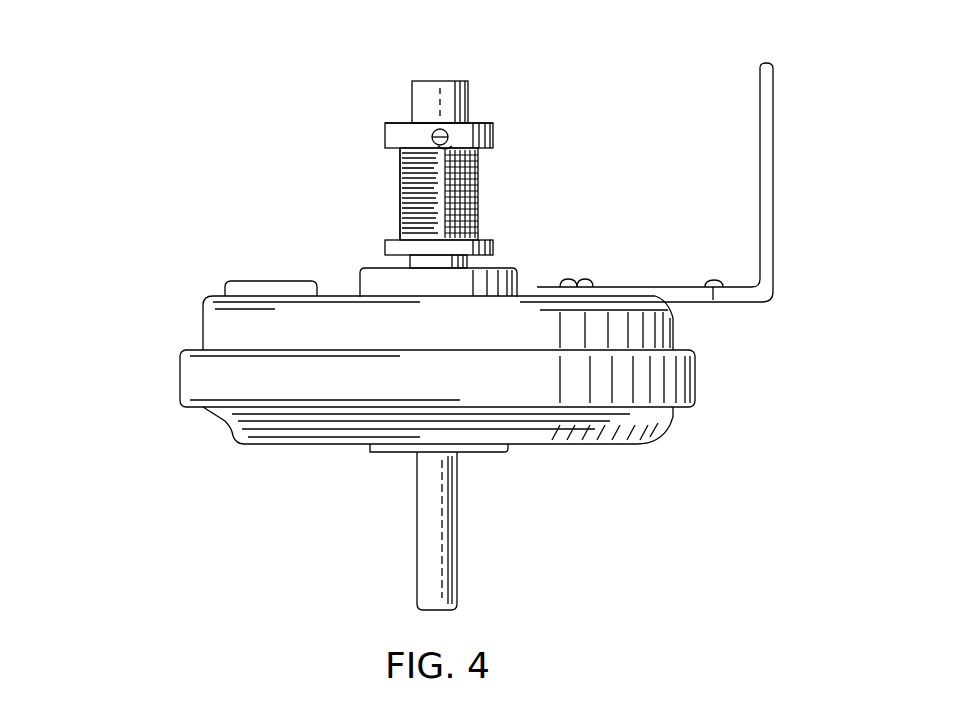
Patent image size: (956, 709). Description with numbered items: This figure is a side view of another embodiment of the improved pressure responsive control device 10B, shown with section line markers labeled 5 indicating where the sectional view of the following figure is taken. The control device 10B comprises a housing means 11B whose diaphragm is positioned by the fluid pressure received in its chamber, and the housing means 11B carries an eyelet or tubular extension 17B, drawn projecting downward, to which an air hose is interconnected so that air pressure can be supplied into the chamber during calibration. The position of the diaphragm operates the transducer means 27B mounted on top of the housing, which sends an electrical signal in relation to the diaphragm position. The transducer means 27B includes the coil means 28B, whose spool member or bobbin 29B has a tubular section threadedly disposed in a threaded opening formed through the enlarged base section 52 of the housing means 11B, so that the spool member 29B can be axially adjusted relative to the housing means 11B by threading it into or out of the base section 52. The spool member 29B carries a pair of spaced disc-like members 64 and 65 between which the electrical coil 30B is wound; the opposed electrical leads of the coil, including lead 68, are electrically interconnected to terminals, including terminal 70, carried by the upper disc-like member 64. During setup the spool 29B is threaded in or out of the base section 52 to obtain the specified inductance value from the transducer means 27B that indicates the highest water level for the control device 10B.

The section line 5- 5 is at (180, 35).
The pressure responsive control device 10B is at (595, 100).
The housing means 11B is at (225, 423).
The tubular extension 17B is at (453, 565).
The transducer means 27B is at (486, 199).
The coil means 28B is at (400, 189).
The spool member 29B is at (380, 135).
The electrical coil 30B is at (400, 166).
The enlarged section 52 is at (516, 273).
The disc-like member 64 is at (393, 125).
The disc-like member 65 is at (385, 246).
The electrical lead 68 is at (451, 148).
The terminal 70 is at (442, 132).